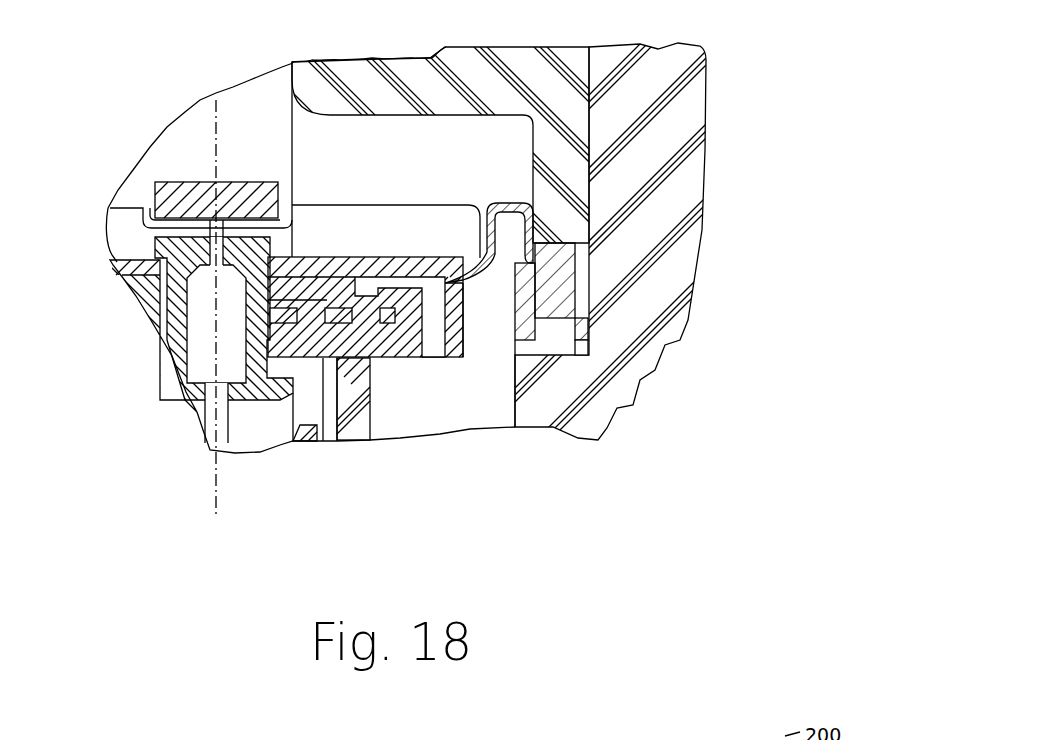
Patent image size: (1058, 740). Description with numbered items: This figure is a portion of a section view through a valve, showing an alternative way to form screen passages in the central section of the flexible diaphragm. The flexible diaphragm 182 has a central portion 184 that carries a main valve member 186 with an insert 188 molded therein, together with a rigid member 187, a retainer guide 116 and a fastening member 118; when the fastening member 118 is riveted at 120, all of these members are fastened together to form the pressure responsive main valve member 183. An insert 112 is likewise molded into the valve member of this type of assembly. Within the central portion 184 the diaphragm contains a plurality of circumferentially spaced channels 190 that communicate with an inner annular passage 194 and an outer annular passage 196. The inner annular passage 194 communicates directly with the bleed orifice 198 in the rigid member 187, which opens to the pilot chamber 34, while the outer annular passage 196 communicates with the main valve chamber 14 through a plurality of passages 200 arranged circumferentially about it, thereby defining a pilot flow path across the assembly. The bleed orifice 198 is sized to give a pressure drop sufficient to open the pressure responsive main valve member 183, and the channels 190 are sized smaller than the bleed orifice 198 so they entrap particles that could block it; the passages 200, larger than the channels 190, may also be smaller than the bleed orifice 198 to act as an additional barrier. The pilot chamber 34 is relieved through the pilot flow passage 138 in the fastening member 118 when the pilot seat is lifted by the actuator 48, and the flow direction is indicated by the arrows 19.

The main valve chamber 14 is at (498, 404).
The flow path 19 is at (346, 293).
The pilot chamber 34 is at (335, 160).
The actuator 48 is at (255, 133).
The insert 112 is at (362, 360).
The retainer guide 116 is at (307, 427).
The fastening member 118 is at (148, 251).
The rivet 120 is at (245, 393).
The pilot flow passage 138 is at (200, 343).
The flexible diaphragm 182 is at (498, 205).
The pressure responsive main valve member 183 is at (436, 226).
The central portion 184 is at (398, 337).
The main valve member 186 is at (395, 360).
The rigid member 187 is at (510, 203).
The insert 188 is at (322, 358).
The channels 190 is at (400, 283).
The inner annular passage 194 is at (340, 362).
The outer annular passage 196 is at (433, 283).
The bleed orifice 198 is at (364, 285).
The passages 200 is at (440, 355).